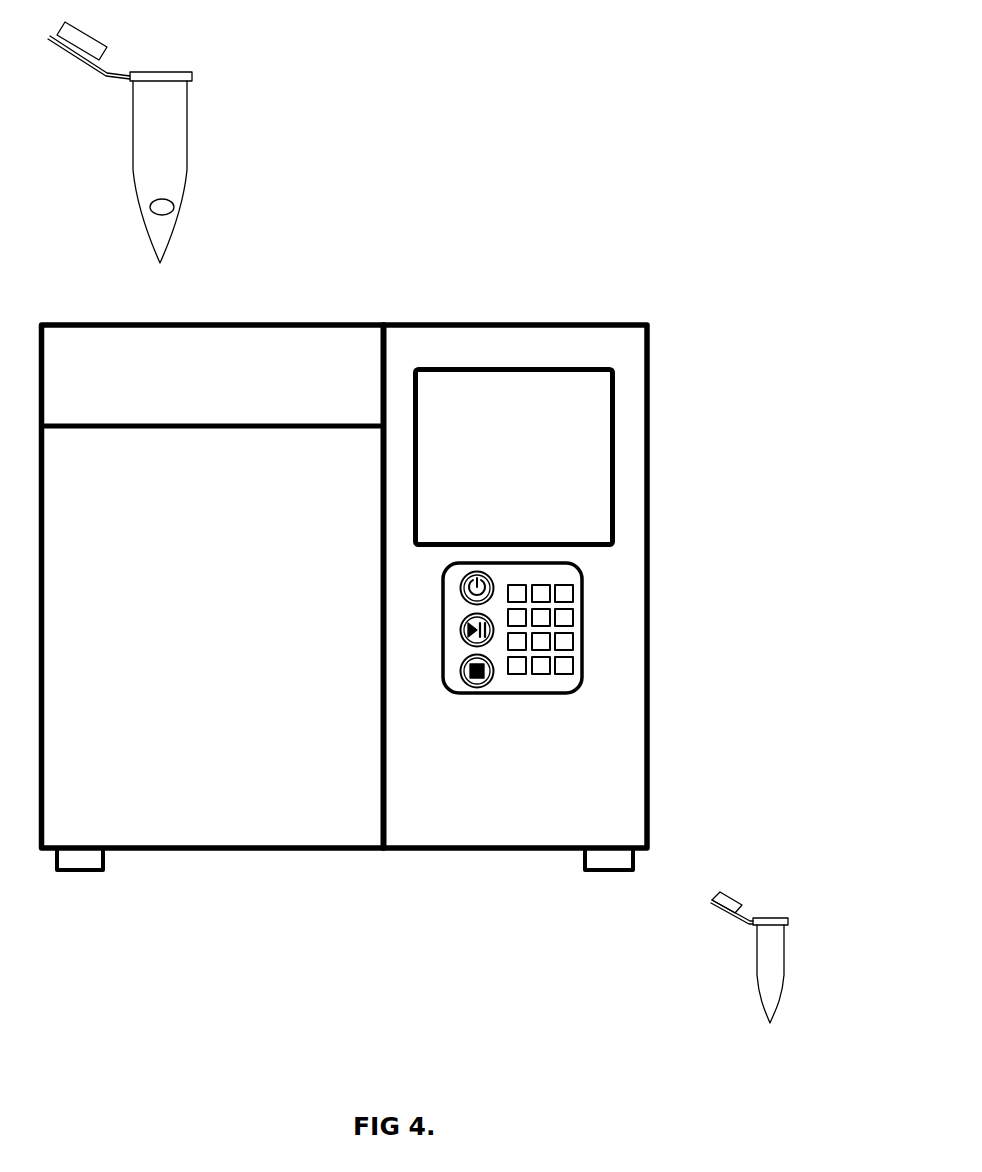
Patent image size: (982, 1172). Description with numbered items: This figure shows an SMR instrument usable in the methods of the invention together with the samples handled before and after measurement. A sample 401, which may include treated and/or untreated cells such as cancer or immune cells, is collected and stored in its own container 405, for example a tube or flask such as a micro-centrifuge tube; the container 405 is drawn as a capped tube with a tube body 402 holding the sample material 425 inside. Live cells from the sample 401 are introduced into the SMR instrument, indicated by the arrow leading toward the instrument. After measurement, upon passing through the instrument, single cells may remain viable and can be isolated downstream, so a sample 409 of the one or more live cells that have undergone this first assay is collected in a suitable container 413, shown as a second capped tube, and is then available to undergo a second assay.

The sample 401 is at (535, 322).
The sample tube 402 is at (150, 145).
The container 405 is at (187, 95).
The sample 425 is at (175, 207).
The sample 409 is at (687, 803).
The container 413 is at (785, 945).